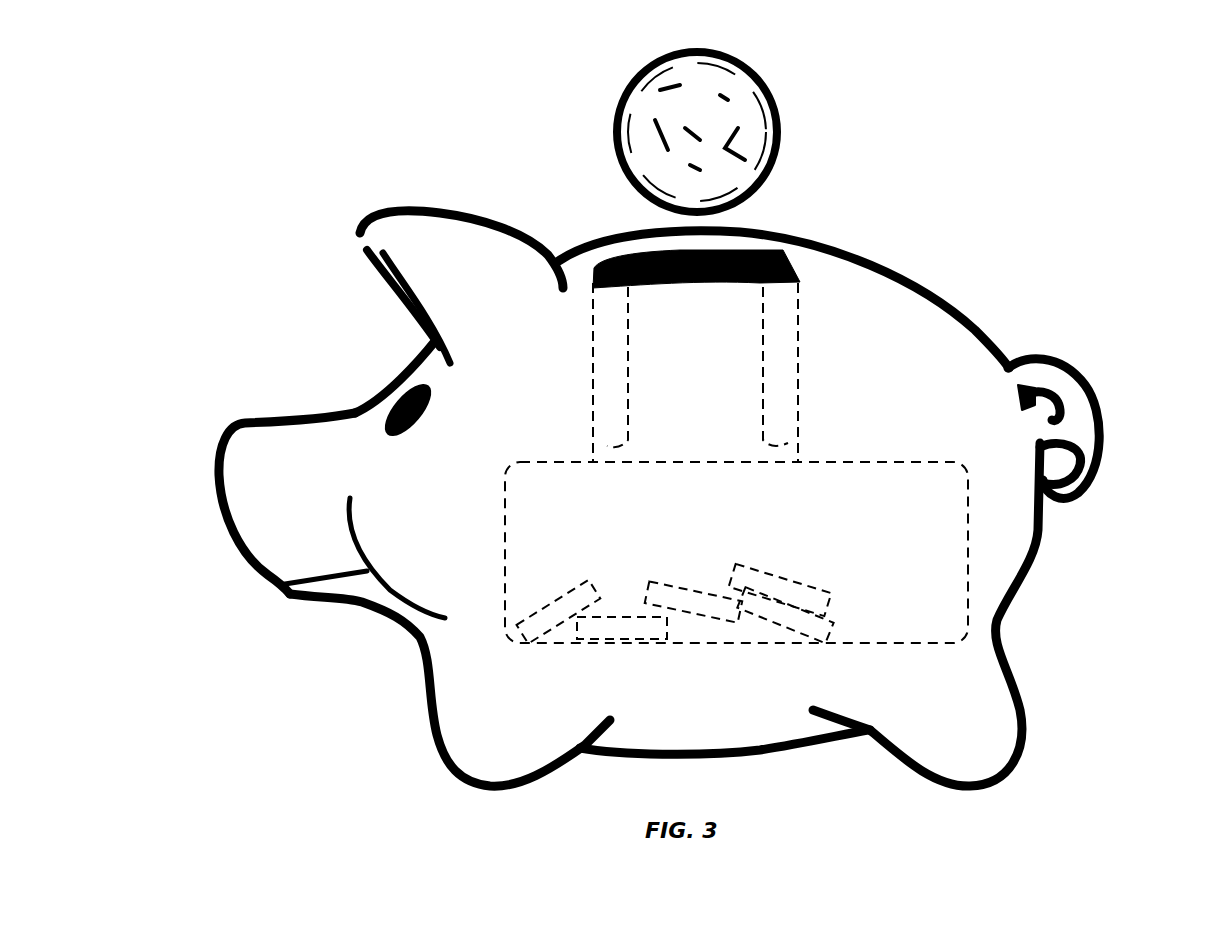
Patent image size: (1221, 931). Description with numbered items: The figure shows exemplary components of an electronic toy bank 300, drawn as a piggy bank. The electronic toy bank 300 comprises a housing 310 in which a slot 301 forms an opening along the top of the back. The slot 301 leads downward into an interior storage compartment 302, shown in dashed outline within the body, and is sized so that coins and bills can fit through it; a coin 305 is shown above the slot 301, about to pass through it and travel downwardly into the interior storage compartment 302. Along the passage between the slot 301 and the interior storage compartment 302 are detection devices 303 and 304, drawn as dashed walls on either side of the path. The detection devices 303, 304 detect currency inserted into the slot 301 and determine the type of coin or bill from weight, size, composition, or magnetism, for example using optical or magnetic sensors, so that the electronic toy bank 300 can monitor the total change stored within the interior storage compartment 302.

The electronic toy bank 300 is at (1095, 772).
The slot 301 is at (787, 237).
The interior storage compartment 302 is at (882, 520).
The detection device 303 is at (610, 358).
The detection device 304 is at (777, 360).
The coin 305 is at (783, 127).
The housing 310 is at (287, 417).